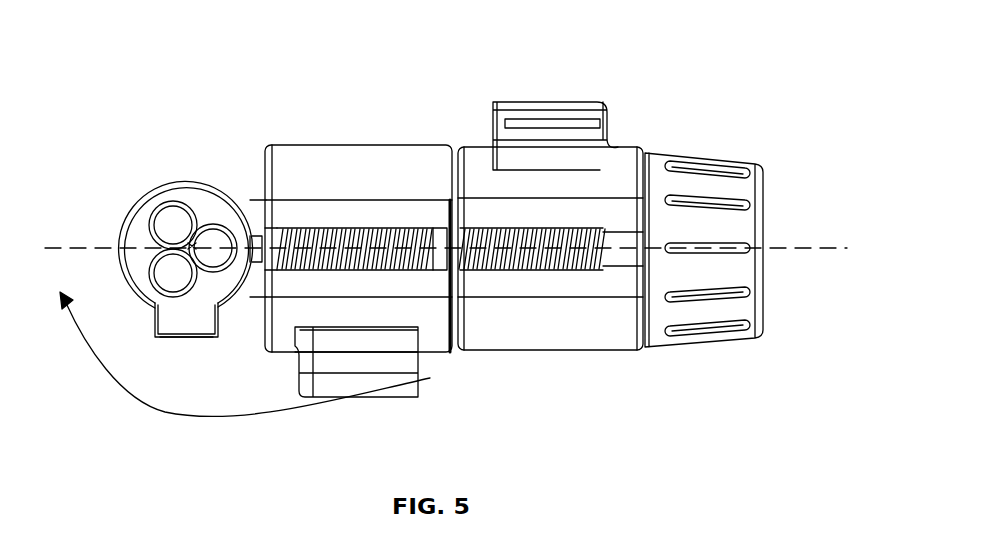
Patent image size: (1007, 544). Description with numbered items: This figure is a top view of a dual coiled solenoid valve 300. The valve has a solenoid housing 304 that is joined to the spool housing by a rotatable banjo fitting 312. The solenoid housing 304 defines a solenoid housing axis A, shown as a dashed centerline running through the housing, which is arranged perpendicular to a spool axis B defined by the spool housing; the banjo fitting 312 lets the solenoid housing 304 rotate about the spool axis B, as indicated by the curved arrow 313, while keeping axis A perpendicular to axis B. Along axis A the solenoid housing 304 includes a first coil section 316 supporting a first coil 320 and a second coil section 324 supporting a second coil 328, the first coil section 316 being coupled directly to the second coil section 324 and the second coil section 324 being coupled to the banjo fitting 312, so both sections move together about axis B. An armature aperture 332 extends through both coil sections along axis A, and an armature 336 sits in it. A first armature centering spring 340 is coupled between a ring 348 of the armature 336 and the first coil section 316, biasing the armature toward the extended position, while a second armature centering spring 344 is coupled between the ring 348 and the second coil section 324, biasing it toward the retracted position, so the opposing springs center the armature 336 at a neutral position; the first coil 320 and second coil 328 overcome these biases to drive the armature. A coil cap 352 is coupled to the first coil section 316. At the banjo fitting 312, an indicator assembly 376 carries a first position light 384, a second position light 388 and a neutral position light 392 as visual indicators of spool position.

The duel coiled solenoid valve 300 is at (229, 82).
The solenoid housing 304 is at (434, 129).
The banjo fitting 312 is at (122, 222).
The arrow 313 is at (175, 417).
The first coil section 316 is at (628, 158).
The first coil 320 is at (574, 125).
The second coil section 324 is at (315, 162).
The second coil 328 is at (354, 390).
The armature aperture 332 is at (340, 207).
The armature 336 is at (255, 284).
The first armature centering spring 340 is at (528, 222).
The second armature centering spring 344 is at (398, 272).
The ring 348 is at (440, 258).
The coil cap 352 is at (747, 192).
The indicator assembly 376 is at (193, 317).
The first position light 384 is at (160, 222).
The second position light 388 is at (213, 240).
The neutral position light 392 is at (172, 282).
The solenoid housing axis A is at (822, 248).
The spool axis B is at (192, 238).